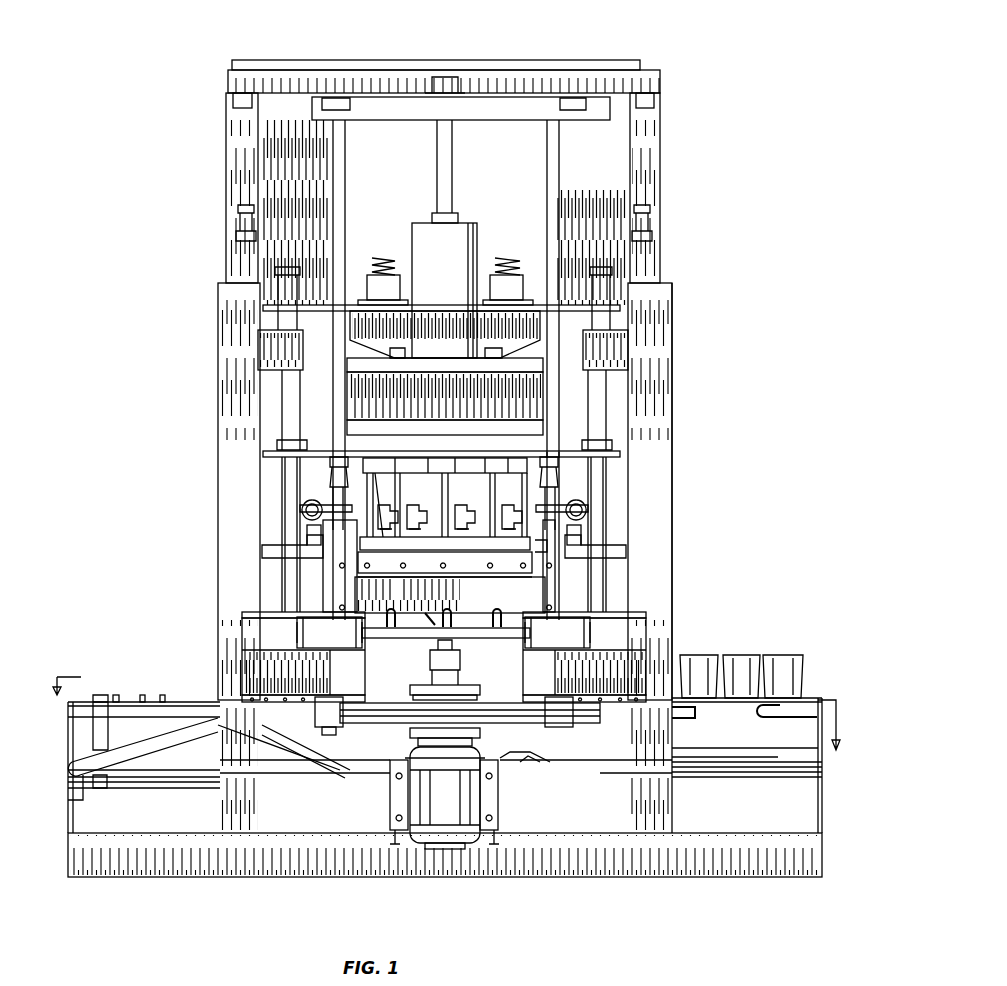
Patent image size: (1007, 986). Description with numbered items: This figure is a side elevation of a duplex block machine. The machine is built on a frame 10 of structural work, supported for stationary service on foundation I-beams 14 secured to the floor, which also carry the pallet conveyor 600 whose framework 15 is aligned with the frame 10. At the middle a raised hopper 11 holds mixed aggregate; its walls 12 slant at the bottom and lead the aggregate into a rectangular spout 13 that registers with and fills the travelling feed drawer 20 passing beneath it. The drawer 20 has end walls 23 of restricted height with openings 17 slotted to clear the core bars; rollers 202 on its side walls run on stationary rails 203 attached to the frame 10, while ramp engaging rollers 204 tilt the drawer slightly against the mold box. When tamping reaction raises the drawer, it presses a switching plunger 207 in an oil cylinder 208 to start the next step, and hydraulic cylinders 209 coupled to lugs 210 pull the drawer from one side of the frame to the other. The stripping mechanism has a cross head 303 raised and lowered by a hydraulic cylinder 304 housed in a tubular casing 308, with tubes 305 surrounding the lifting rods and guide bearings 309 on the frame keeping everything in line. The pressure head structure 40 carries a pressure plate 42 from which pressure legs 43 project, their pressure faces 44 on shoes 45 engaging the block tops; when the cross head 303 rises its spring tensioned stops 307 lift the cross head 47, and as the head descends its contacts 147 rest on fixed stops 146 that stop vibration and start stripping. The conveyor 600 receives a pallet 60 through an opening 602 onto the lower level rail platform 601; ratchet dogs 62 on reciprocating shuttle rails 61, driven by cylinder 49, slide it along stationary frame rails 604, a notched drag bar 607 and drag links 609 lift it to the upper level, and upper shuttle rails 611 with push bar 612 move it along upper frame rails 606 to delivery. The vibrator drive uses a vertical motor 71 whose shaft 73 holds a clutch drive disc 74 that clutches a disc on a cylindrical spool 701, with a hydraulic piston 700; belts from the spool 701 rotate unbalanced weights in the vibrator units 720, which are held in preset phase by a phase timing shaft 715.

The frame 10 is at (672, 318).
The hopper 11 is at (600, 62).
The walls 12 is at (445, 461).
The rectangular spout 13 is at (535, 547).
The I-beams 14 is at (822, 866).
The framework 15 is at (73, 808).
The openings 17 is at (497, 613).
The feed drawer 20 is at (323, 583).
The end walls 23 is at (394, 605).
The pressure head structure 40 is at (420, 470).
The pressure plate 42 is at (562, 466).
The pressure legs 43 is at (380, 478).
The pressure faces 44 is at (540, 562).
The shoes 45 is at (522, 542).
The cross head 47 is at (404, 120).
The cylinder 49 is at (150, 775).
The pallet 60 is at (177, 700).
The shuttle rails 61 is at (505, 762).
The ratchet dogs 62 is at (548, 768).
The motor 71 is at (445, 812).
The shaft 73 is at (420, 747).
The clutch drive disc 74 is at (490, 795).
The fixed stops 146 is at (236, 210).
The contacts 147 is at (232, 100).
The rollers 202 is at (307, 530).
The tracks or rails 203 is at (300, 552).
The ramp engaging rollers 204 is at (255, 620).
The switching plunger 207 is at (338, 490).
The oil cylinder 208 is at (331, 470).
The hydraulic cylinders 209 is at (303, 510).
The lugs 210 is at (580, 525).
The cross head 303 is at (440, 330).
The hydraulic cylinder 304 is at (350, 360).
The tubes 305 is at (300, 414).
The spring tensioned stops 307 is at (383, 257).
The tubular casing 308 is at (478, 225).
The guide bearings 309 is at (265, 342).
The pallet conveyor 600 is at (340, 722).
The lower level rail platform 601 is at (797, 720).
The opening 602 is at (718, 747).
The stationary frame rails 604 is at (300, 775).
The upper frame rails 606 is at (673, 715).
The notched drag bar 607 is at (305, 725).
The drag links 609 is at (127, 753).
The shuttle rails 611 is at (142, 708).
The push bar 612 is at (115, 702).
The hydraulic piston 700 is at (470, 692).
The cylindrical spool 701 is at (392, 783).
The phase timing shaft 715 is at (398, 648).
The vibrator units 720 is at (275, 665).